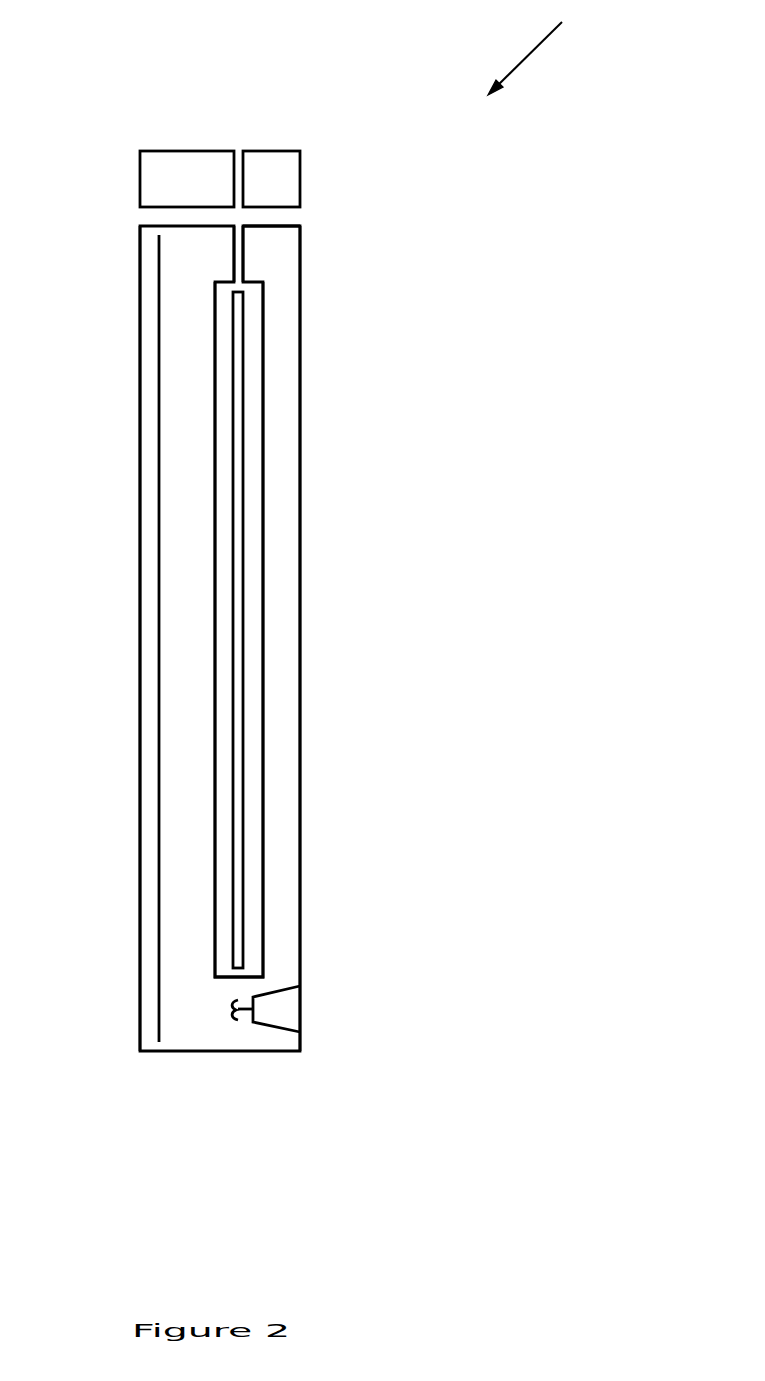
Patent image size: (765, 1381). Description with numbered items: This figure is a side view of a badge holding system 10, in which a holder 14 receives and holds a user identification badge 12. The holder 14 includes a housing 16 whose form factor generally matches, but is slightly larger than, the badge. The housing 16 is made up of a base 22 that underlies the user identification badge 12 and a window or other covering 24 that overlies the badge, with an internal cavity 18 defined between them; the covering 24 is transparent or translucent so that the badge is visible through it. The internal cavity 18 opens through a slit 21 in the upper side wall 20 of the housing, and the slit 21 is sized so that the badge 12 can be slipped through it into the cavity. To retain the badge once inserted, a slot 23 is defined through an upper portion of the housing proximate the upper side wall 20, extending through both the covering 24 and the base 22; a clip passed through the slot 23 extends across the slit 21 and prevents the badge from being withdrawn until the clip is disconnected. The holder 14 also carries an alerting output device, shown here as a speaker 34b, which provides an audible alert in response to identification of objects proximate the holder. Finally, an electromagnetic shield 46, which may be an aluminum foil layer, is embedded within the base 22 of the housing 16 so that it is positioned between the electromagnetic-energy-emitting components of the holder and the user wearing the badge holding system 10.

The badge holding system 10 is at (540, 53).
The user identification badge 12 is at (243, 582).
The holder 14 is at (212, 1032).
The housing 16 is at (168, 151).
The internal cavity 18 is at (227, 827).
The upper side wall 20 is at (277, 151).
The slit 21 is at (237, 150).
The base 22 is at (140, 398).
The slot 23 is at (288, 217).
The window or other covering 24 is at (300, 398).
The speaker 34b is at (298, 1012).
The electromagnetic shield 46 is at (158, 620).